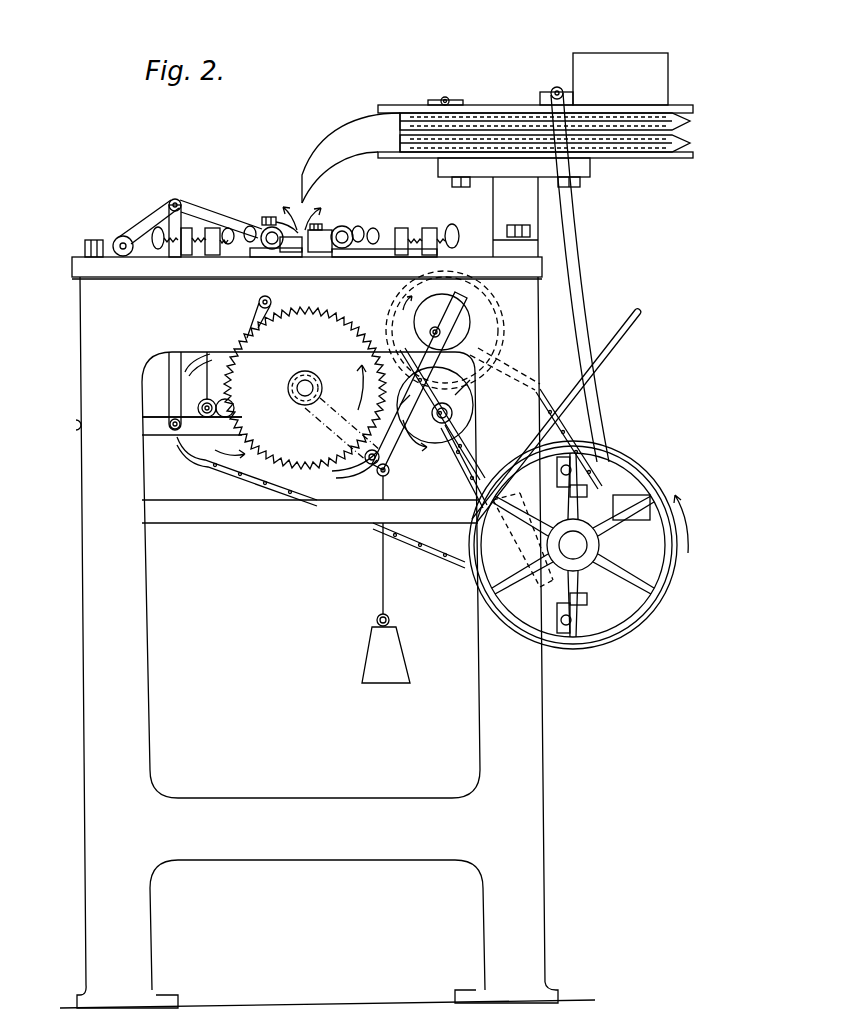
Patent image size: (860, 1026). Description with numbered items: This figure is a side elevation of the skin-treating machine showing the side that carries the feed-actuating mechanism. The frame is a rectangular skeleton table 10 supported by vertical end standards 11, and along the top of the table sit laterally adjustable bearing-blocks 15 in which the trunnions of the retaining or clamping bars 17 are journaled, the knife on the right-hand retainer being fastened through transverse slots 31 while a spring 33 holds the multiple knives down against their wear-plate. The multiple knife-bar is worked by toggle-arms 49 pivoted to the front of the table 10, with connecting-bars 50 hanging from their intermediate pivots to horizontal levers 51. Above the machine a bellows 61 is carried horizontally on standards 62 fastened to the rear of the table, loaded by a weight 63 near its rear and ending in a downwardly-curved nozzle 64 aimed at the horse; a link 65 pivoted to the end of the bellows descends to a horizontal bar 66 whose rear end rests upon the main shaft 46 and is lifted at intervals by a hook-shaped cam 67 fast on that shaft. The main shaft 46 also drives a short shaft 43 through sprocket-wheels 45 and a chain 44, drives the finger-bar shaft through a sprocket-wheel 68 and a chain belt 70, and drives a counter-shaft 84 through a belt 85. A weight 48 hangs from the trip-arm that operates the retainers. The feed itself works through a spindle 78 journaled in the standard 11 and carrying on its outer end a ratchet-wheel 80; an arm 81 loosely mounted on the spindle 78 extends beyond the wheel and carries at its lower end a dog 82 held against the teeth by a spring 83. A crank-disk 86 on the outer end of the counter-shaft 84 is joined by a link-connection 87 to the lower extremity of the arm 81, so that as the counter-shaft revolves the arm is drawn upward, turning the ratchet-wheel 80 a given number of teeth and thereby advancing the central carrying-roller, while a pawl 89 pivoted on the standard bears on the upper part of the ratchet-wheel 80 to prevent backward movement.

The table 10 is at (307, 268).
The end standards 11 is at (327, 642).
The bearing-block 15 is at (340, 241).
The retaining or clamping bars 17 is at (289, 247).
The transverse slots 31 is at (342, 430).
The spring 33 is at (324, 279).
The short shaft 43 is at (437, 405).
The chain 44 is at (464, 466).
The sprocket-wheels 45 is at (415, 435).
The main shaft 46 is at (578, 545).
The weight 48 is at (386, 603).
The toggle-arms 49 is at (140, 228).
The connecting-bars 50 is at (181, 211).
The horizontal lever 51 is at (192, 426).
The bellows 61 is at (704, 130).
The standards 62 is at (514, 207).
The weight 63 is at (604, 79).
The nozzle 64 is at (351, 158).
The link 65 is at (584, 292).
The horizontal bars 66 is at (310, 511).
The hook-shaped cams 67 is at (568, 636).
The sprocket-wheel 68 is at (209, 384).
The chain belt 70 is at (430, 546).
The spindle 78 is at (316, 381).
The ratchet-wheel 80 is at (305, 388).
The arm 81 is at (476, 456).
The dog 82 is at (351, 475).
The spring 83 is at (390, 475).
The counter-shaft 84 is at (447, 325).
The belt 85 is at (540, 392).
The crank-disk 86 is at (463, 330).
The link-connection 87 is at (451, 333).
The pawl 89 is at (253, 314).